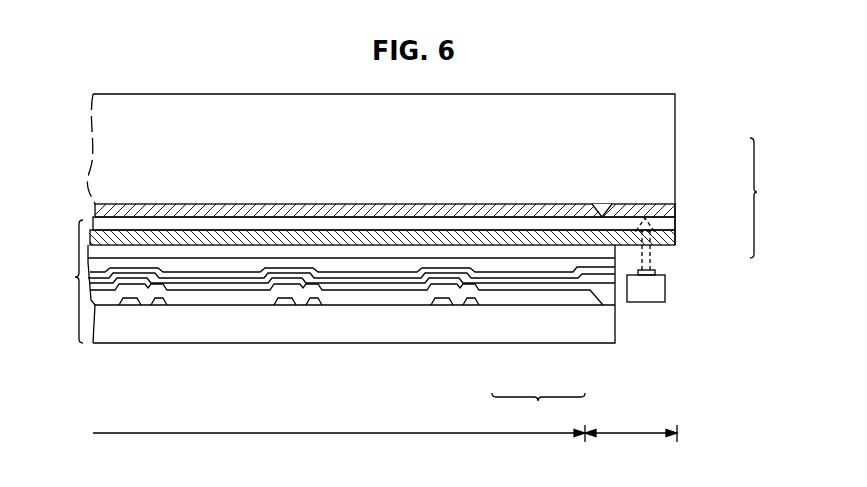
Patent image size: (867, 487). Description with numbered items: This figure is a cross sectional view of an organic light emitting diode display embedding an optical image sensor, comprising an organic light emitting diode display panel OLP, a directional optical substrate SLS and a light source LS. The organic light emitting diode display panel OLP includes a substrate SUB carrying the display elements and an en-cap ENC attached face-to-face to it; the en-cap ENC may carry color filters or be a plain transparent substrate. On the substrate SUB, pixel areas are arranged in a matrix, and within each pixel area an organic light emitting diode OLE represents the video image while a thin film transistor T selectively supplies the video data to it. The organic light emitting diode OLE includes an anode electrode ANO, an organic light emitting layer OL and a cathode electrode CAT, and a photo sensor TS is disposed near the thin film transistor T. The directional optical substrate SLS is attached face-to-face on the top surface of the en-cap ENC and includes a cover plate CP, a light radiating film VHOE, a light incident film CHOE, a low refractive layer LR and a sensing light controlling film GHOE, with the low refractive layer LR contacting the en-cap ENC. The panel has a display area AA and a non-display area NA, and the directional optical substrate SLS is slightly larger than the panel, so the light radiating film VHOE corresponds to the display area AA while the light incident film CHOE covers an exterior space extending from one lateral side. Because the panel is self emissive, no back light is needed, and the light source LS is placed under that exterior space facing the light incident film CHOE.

The cover plate CP is at (668, 143).
The light radiating film VHOE is at (592, 204).
The light incident film CHOE is at (670, 210).
The low refractive layer LR is at (668, 227).
The sensing light controlling film GHOE is at (678, 238).
The directional optical substrate SLS is at (768, 198).
The light source LS is at (665, 287).
The organic light emitting diode display panel OLP is at (61, 281).
The photo sensor TS is at (127, 300).
The thin film transistor T is at (159, 300).
The substrate SUB is at (212, 330).
The en-cap ENC is at (362, 252).
The anode electrode ANO is at (503, 290).
The organic light emitting layer OL is at (537, 283).
The cathode electrode CAT is at (562, 278).
The organic light emitting diode OLE is at (538, 407).
The display area AA is at (339, 442).
The non-display area NA is at (631, 440).